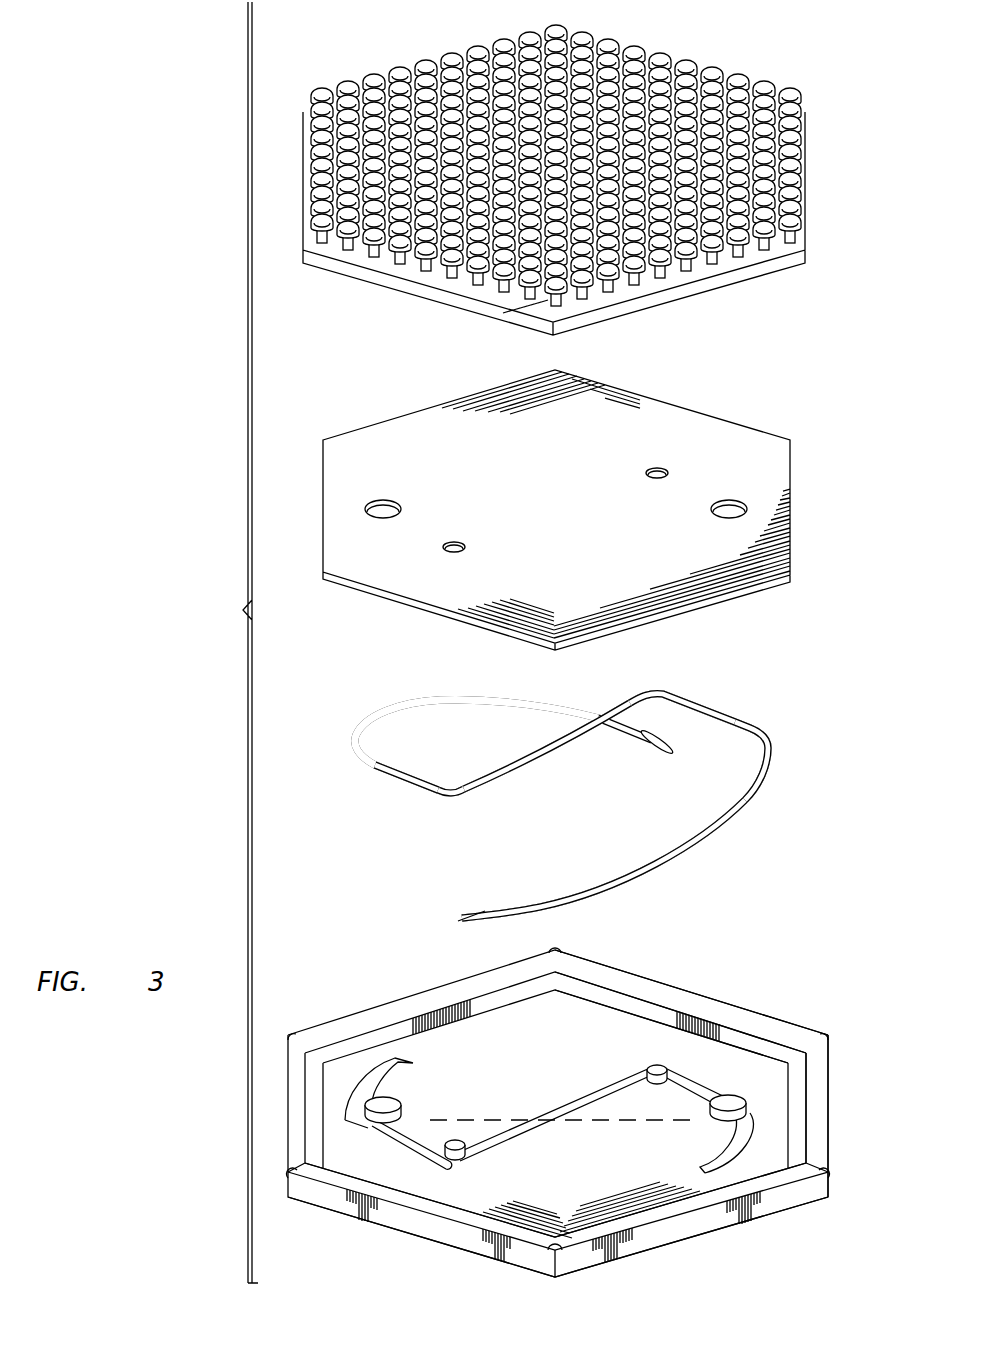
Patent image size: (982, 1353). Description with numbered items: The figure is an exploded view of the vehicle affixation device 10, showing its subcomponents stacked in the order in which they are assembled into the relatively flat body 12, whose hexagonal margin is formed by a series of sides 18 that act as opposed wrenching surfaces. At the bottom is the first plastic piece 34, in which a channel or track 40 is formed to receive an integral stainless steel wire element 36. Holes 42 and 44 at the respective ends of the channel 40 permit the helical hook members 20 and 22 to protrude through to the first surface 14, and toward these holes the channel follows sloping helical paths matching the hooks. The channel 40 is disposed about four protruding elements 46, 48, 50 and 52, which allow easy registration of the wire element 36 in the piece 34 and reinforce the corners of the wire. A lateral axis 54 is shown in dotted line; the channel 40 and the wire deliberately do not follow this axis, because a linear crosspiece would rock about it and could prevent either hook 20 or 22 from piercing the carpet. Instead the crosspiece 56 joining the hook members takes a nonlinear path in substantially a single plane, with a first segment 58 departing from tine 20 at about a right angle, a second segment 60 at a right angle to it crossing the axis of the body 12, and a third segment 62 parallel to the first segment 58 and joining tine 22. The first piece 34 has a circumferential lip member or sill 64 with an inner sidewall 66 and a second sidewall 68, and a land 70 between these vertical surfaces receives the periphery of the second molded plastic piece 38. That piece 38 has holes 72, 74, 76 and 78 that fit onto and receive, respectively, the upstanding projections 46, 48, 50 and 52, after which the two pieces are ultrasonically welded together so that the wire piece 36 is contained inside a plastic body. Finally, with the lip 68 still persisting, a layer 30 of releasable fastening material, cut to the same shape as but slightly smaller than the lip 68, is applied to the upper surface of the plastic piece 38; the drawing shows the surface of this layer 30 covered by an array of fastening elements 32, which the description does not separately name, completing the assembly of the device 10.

The vehicle affixation device 10 is at (235, 642).
The body 12 is at (577, 1118).
The first surface 14 is at (790, 1193).
The sides 18 is at (320, 1195).
The hook member 20 is at (428, 703).
The hook member 22 is at (693, 852).
The layer of releasable fastening material 30 is at (584, 170).
The LED 32 is at (737, 82).
The first plastic piece 34 is at (548, 1090).
The wire element 36 is at (712, 703).
The second molded plastic piece 38 is at (556, 510).
The channel 40 is at (595, 1100).
The hole 42 is at (417, 1055).
The hole 44 is at (707, 1167).
The protruding element 46 is at (373, 1123).
The protruding element 48 is at (457, 1142).
The protruding element 50 is at (657, 1068).
The protruding element 52 is at (730, 1103).
The lateral axis 54 is at (613, 1122).
The crosspiece 56 is at (560, 745).
The first segment 58 is at (400, 767).
The second segment 60 is at (476, 784).
The third segment 62 is at (737, 722).
The sill 64 is at (833, 1050).
The inner sidewall 66 is at (793, 1105).
The second sidewall 68 is at (768, 1037).
The land 70 is at (800, 1137).
The hole 72 is at (380, 500).
The hole 74 is at (455, 545).
The hole 76 is at (661, 468).
The hole 78 is at (731, 502).